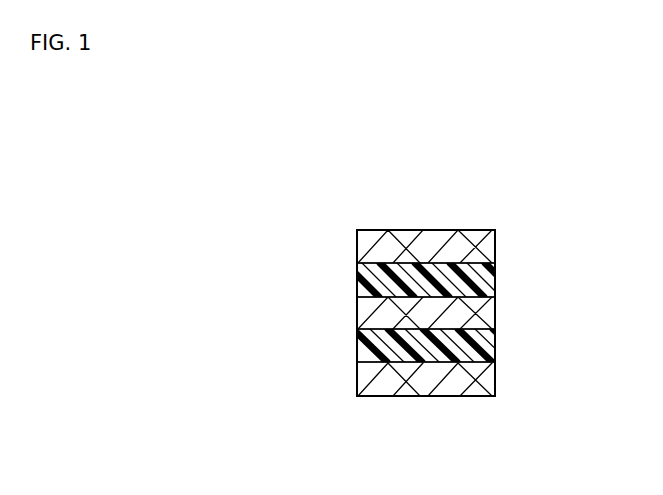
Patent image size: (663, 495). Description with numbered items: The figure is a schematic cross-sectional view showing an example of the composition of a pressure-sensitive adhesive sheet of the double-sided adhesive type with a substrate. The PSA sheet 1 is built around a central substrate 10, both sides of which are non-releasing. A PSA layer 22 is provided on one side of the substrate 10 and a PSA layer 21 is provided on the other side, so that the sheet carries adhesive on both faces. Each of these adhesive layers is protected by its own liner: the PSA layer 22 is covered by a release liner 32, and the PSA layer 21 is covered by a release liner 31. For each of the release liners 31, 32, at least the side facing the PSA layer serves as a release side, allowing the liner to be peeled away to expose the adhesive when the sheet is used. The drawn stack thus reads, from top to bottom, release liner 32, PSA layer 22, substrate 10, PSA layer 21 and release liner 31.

The PSA sheet 1 is at (484, 181).
The release liner 32 is at (495, 246).
The PSA layer 22 is at (495, 281).
The substrate 10 is at (495, 315).
The PSA layer 21 is at (495, 349).
The release liner 31 is at (495, 380).